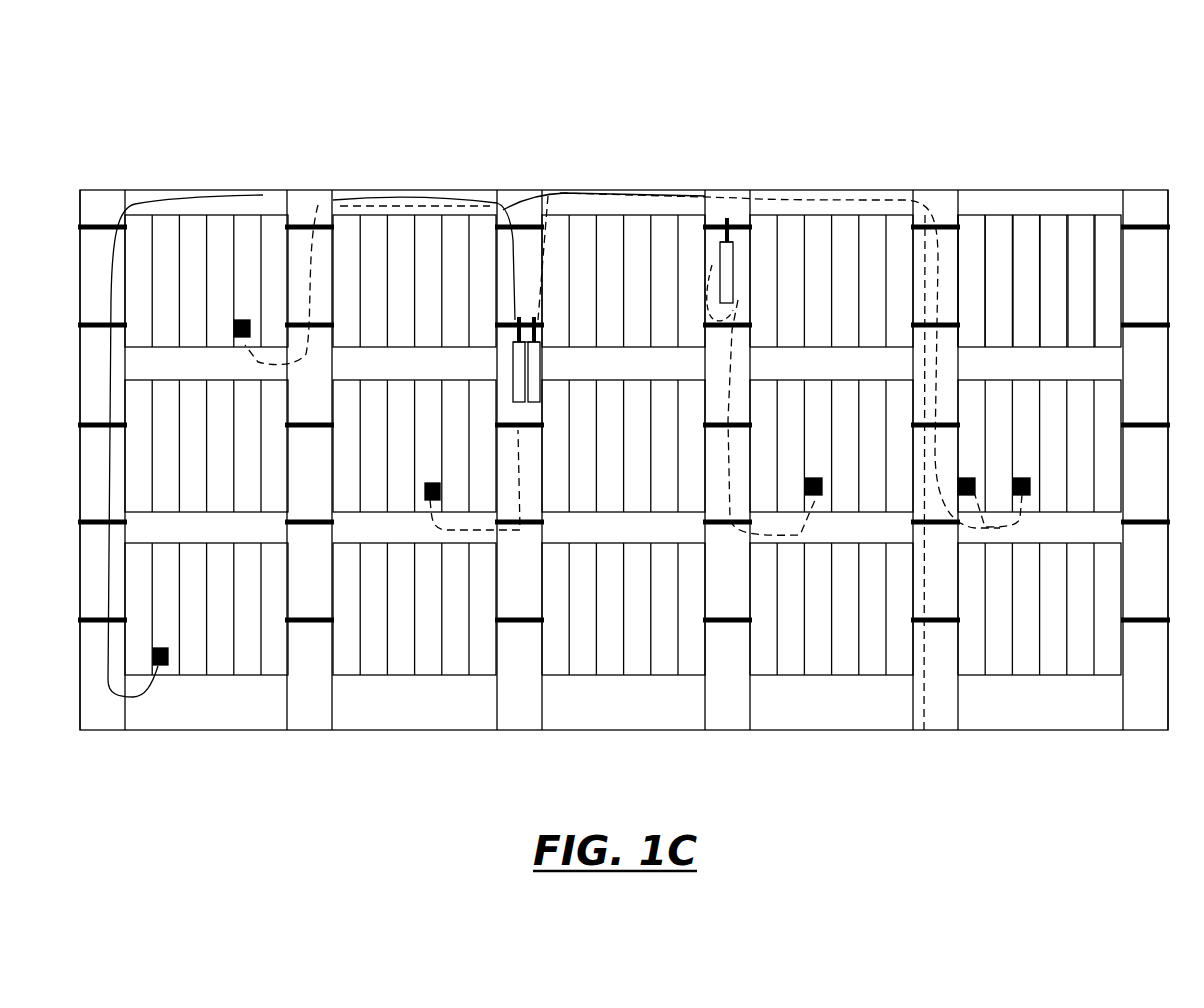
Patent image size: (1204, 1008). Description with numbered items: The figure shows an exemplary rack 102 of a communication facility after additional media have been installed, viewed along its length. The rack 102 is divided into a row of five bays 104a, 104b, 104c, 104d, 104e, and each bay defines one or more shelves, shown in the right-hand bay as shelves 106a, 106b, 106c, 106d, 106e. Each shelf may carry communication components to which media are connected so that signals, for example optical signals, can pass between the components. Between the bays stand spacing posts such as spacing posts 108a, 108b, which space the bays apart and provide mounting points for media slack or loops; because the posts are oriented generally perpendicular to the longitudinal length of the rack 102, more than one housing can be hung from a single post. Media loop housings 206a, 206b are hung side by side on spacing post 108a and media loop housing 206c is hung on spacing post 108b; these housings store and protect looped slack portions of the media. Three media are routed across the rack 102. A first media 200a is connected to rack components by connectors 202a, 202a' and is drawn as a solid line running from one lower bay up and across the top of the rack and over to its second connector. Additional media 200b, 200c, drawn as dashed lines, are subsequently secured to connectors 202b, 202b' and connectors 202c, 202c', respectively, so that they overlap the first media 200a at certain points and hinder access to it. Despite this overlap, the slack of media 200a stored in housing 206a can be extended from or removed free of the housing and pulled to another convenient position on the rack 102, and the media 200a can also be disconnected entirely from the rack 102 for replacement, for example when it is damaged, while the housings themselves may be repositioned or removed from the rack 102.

The rack 102 is at (470, 110).
The bay 104a is at (287, 733).
The bay 104b is at (497, 733).
The bay 104c is at (705, 733).
The bay 104d is at (913, 733).
The bay 104e is at (1123, 733).
The shelf 106a is at (968, 227).
The shelf 106b is at (997, 227).
The shelf 106c is at (1027, 227).
The shelf 106d is at (1053, 227).
The shelf 106e is at (1110, 227).
The spacing post 108a is at (520, 317).
The spacing post 108b is at (727, 218).
The media 200a is at (263, 195).
The media 200b is at (417, 203).
The media 200c is at (921, 730).
The connector 202a is at (208, 641).
The connector 202b is at (204, 311).
The connector 202c is at (430, 482).
The connector 202a' is at (1017, 465).
The connector 202b' is at (864, 465).
The connector 202c' is at (1053, 511).
The media loop housing 206a is at (498, 410).
The media loop housing 206b is at (537, 377).
The media loop housing 206c is at (745, 232).